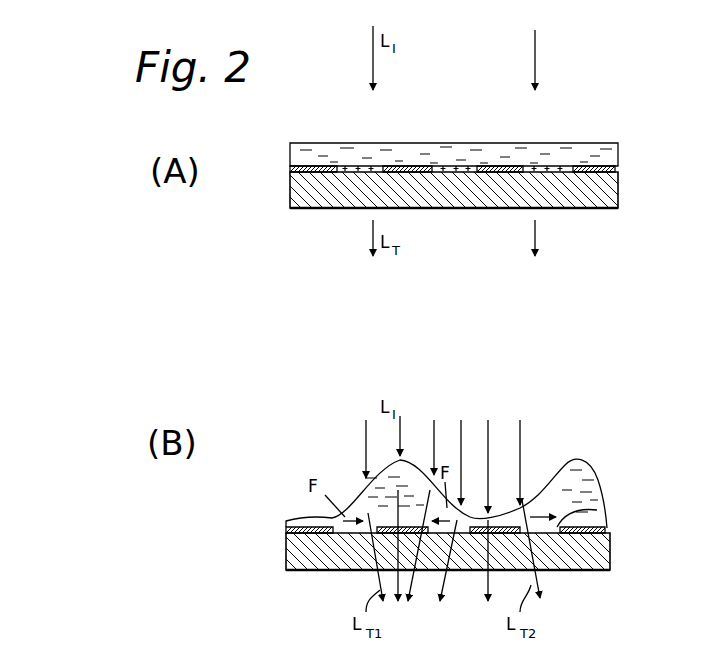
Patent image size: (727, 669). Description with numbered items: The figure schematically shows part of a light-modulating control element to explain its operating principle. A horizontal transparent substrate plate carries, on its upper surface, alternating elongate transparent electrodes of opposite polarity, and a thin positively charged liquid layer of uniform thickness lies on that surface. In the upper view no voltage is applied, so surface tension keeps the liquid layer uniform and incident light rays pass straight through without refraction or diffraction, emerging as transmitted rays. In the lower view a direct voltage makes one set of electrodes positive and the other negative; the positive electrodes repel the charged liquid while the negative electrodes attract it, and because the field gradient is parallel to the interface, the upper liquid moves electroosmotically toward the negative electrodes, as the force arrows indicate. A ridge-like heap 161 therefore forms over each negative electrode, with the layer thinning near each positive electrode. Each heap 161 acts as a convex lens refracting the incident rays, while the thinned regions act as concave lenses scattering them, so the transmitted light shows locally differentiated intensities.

The heap 161 is at (406, 492).